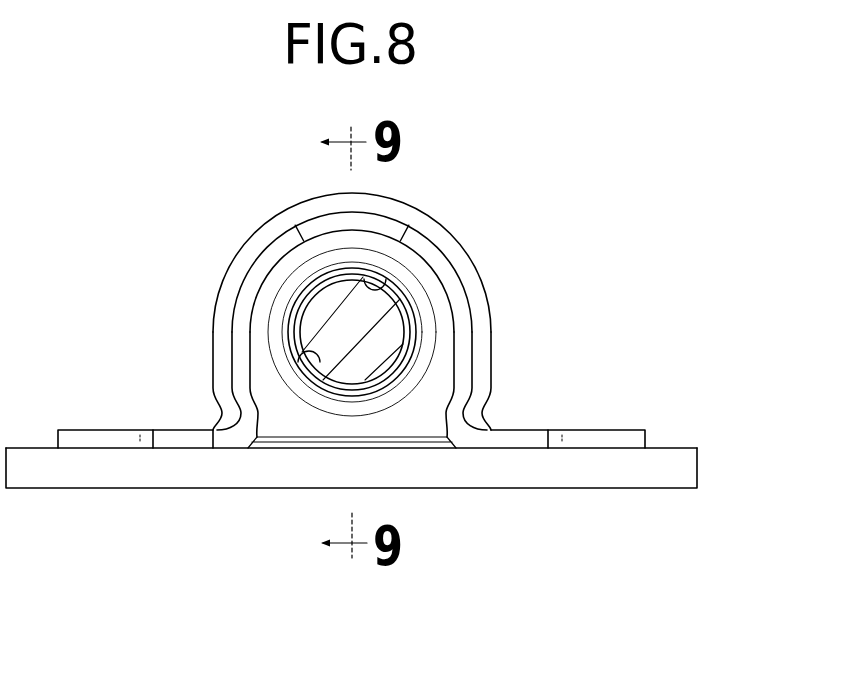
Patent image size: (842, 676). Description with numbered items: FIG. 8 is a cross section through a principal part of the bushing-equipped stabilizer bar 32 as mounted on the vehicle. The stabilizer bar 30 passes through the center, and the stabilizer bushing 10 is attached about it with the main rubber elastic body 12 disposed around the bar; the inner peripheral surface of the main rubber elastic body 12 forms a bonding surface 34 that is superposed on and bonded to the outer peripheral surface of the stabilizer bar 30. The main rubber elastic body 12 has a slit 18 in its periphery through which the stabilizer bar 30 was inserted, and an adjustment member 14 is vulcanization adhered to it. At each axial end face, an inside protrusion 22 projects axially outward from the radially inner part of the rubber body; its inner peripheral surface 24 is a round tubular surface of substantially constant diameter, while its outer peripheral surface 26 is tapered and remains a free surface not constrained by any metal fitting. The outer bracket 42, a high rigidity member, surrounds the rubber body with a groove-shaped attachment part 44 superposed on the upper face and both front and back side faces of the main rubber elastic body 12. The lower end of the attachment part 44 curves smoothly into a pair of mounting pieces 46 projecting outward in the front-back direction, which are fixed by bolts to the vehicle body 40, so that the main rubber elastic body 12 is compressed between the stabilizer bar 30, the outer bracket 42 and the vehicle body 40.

The stabilizer bushing 10 is at (250, 442).
The main rubber elastic body 12 is at (344, 315).
The adjustment member 14 is at (412, 452).
The slit 18 is at (416, 356).
The inside protrusion 22 is at (266, 368).
The inner peripheral surface 24 is at (322, 365).
The outer peripheral surface 26 is at (275, 325).
The stabilizer bar 30 is at (328, 308).
The bushing-equipped stabilizer bar 32 is at (367, 304).
The bonding surface 34 is at (386, 279).
The vehicle body 40 is at (141, 480).
The outer bracket 42 is at (228, 251).
The attachment part 44 is at (247, 290).
The mounting piece 46 is at (107, 440).